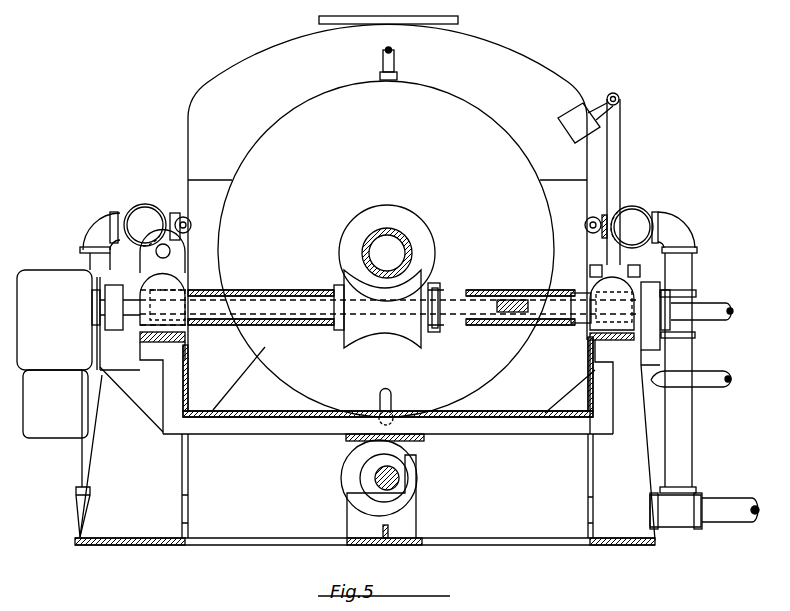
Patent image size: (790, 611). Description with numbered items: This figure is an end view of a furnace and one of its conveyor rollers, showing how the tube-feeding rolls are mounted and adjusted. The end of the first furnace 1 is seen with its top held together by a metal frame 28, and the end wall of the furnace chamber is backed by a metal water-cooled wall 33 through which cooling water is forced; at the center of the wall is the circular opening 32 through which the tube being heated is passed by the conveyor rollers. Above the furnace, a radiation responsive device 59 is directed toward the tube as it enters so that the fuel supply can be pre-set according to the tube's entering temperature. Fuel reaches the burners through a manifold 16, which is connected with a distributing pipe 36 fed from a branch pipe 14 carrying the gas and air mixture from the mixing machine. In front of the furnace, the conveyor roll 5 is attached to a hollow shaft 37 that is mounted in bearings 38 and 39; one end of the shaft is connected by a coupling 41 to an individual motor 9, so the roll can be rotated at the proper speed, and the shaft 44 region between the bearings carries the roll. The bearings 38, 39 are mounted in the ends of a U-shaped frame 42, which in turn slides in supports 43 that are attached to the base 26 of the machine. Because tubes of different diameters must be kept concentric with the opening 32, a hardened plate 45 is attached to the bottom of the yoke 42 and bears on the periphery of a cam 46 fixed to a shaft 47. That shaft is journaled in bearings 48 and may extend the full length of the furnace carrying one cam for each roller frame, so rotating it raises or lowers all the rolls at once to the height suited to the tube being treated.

The first furnace 1 is at (213, 74).
The metal frame 28 is at (191, 132).
The water-cooled wall 33 is at (318, 104).
The circular opening 32 is at (368, 206).
The radiation responsive device 59 is at (580, 103).
The manifold 16 is at (148, 208).
The distributing pipe 36 is at (86, 263).
The branch pipe 14 is at (716, 518).
The bearing 38 is at (148, 282).
The coupling 41 is at (118, 331).
The shaft 44 is at (282, 310).
The conveyor roll 5 is at (343, 332).
The hollow shaft 37 is at (490, 290).
The bearing 39 is at (622, 284).
The motor 9 is at (45, 432).
The U-shaped frame 42 is at (512, 431).
The frame 26 is at (186, 467).
The support 43 is at (90, 514).
The hardened plate 45 is at (420, 442).
The cam 46 is at (350, 477).
The shaft 47 is at (400, 481).
The bearing 48 is at (420, 518).